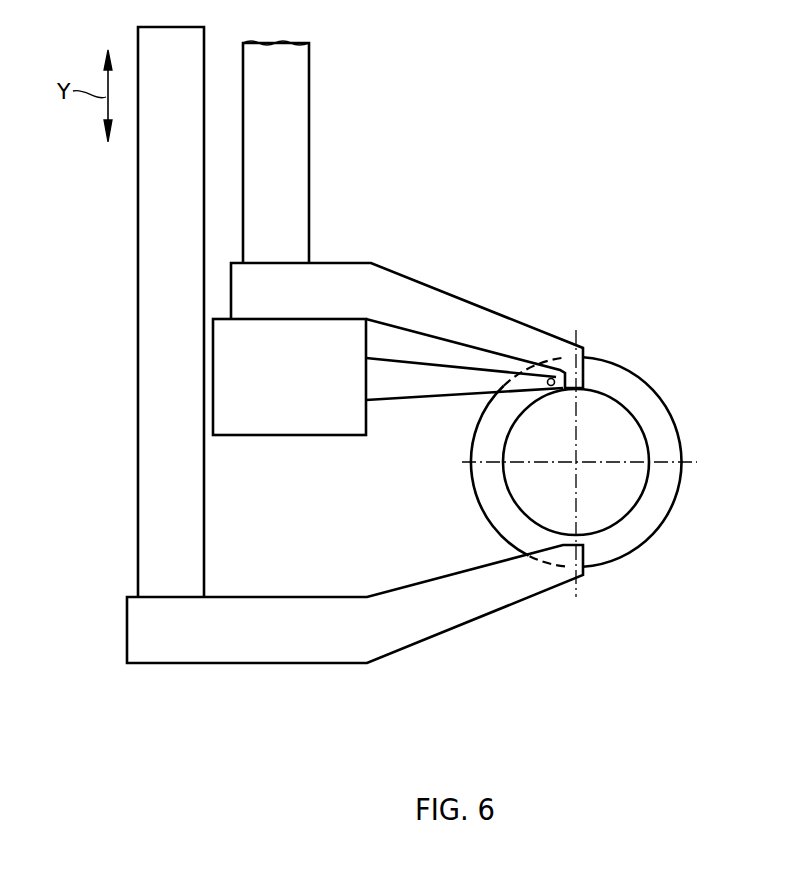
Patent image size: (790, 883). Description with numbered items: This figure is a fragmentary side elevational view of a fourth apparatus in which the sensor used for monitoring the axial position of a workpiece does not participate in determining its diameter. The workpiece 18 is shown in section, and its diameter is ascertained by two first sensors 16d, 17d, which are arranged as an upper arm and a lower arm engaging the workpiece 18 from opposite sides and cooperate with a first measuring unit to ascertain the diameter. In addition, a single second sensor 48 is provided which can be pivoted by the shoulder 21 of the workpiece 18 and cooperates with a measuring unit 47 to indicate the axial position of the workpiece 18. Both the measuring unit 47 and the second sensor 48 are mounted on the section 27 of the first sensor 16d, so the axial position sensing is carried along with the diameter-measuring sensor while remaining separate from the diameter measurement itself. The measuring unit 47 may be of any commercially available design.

The section 27 is at (298, 98).
The first sensor 16d is at (452, 307).
The first sensor 17d is at (457, 613).
The measuring unit 47 is at (287, 418).
The second sensor 48 is at (410, 388).
The shoulder 21 is at (637, 394).
The workpiece 18 is at (630, 443).